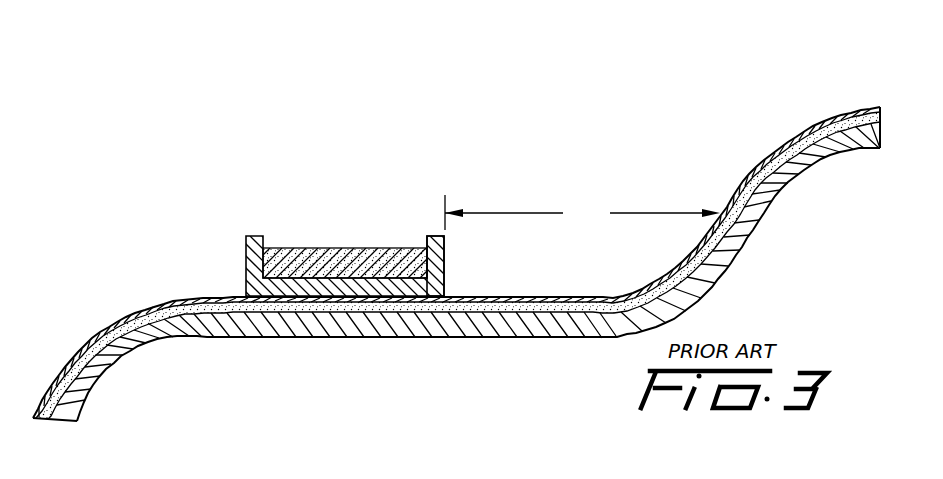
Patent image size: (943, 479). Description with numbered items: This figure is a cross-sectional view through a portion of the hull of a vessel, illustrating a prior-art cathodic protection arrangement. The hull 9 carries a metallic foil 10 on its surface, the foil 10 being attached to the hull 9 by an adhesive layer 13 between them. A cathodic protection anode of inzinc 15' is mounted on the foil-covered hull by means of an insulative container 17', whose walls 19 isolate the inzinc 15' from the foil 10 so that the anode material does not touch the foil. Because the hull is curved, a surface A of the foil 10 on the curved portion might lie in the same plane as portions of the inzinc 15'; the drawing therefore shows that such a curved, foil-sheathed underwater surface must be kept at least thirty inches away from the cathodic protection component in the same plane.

The hull 9 is at (503, 330).
The metallic foil 10 is at (775, 152).
The adhesive layer 13 is at (820, 125).
The insulative container 17' is at (327, 252).
The walls 19 is at (445, 268).
The inzinc 15' is at (345, 232).
The surface A is at (719, 211).